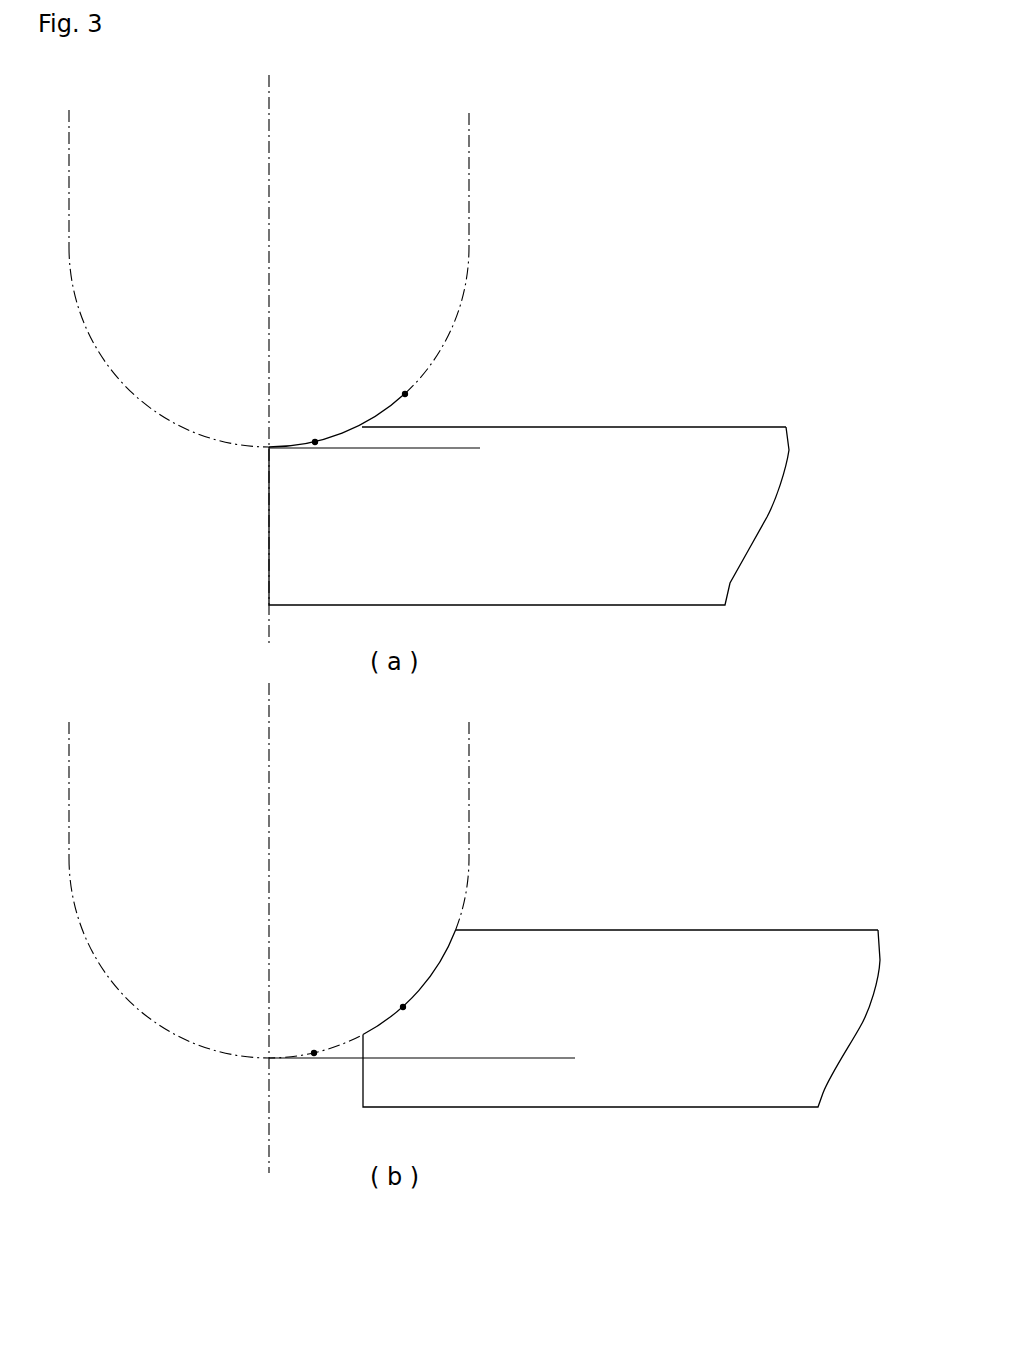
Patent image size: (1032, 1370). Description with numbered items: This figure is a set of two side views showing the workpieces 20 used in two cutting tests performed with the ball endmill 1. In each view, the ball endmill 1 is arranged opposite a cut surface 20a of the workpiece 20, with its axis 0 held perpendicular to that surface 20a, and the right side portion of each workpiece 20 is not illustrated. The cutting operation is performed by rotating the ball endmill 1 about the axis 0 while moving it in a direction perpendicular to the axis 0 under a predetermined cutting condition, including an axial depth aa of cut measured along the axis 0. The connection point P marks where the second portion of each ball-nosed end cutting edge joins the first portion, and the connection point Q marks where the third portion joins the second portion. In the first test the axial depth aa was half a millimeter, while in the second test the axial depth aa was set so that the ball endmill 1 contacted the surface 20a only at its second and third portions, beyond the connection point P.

The axis 0 is at (269, 105).
The ball endmill 1 is at (505, 141).
The workpiece 20 is at (735, 360).
The cut surface 20a is at (495, 427).
The connection point P is at (316, 440).
The connection point Q is at (405, 392).
The axial depth of cut aa is at (452, 373).